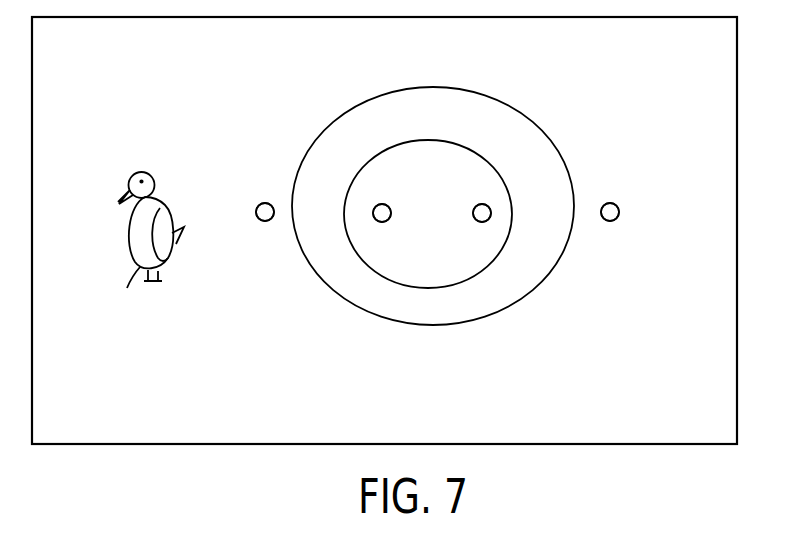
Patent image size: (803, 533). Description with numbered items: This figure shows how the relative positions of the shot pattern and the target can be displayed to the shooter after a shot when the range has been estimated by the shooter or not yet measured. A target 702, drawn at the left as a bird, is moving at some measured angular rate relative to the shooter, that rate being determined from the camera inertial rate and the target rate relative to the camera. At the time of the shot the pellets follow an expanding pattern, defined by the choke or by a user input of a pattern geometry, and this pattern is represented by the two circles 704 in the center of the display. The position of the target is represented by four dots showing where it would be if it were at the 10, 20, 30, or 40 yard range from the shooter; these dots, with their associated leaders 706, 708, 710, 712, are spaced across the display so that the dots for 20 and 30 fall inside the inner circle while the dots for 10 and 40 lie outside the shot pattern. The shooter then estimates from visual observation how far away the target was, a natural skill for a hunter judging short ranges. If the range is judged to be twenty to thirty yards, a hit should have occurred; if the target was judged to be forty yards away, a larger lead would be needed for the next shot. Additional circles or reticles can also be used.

The target 702 is at (147, 249).
The two circles 704 is at (503, 247).
The first marker 706 is at (264, 221).
The second marker 708 is at (382, 222).
The third marker 710 is at (474, 219).
The fourth marker 712 is at (608, 221).
The 10 yard range position 10 is at (265, 191).
The 20 yard range position 20 is at (383, 197).
The 30 yard range position 30 is at (478, 197).
The 40 yard range position 40 is at (608, 189).